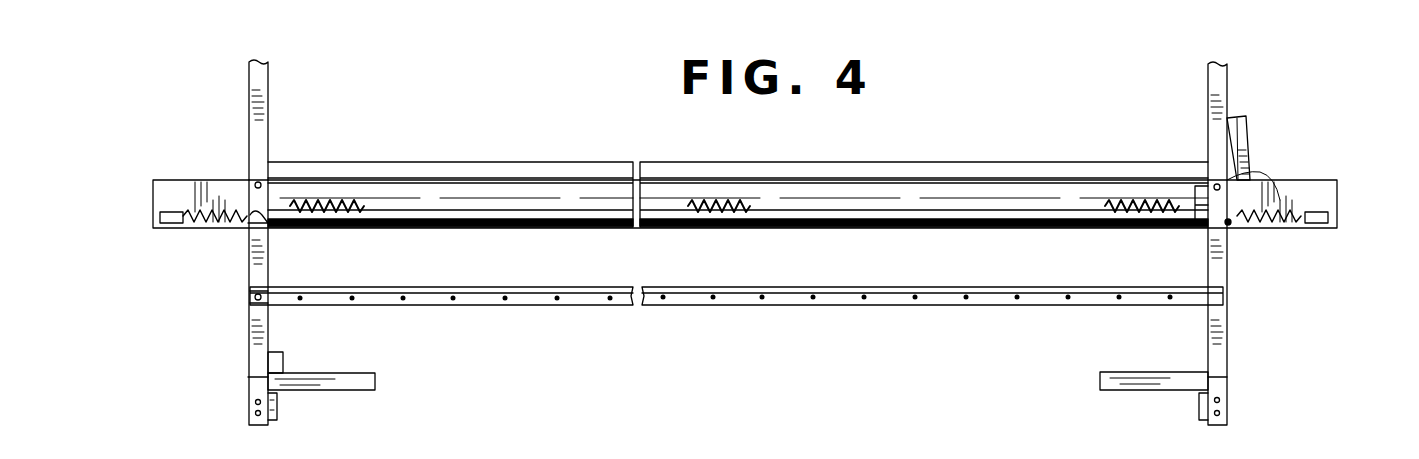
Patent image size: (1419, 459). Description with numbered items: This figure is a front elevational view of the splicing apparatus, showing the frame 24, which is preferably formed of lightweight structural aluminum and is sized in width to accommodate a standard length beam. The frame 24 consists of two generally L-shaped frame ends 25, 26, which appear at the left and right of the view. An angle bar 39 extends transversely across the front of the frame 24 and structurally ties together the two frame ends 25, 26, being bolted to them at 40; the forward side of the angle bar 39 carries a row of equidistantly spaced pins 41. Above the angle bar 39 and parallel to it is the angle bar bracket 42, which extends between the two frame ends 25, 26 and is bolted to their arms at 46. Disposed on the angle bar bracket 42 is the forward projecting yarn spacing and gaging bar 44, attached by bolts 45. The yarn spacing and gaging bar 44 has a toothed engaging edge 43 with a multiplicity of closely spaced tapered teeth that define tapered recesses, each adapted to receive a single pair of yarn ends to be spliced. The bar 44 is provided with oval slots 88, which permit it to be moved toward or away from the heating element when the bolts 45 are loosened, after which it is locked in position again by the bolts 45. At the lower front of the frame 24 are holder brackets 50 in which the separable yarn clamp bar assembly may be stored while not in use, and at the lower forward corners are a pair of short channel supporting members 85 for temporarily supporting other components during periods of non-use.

The frame 24 is at (248, 338).
The frame end 25 is at (272, 95).
The frame end 26 is at (1227, 348).
The angle bar 39 is at (585, 302).
The bolts 40 is at (248, 295).
The pins 41 is at (503, 301).
The angle bar bracket 42 is at (1337, 193).
The toothed engaging edge 43 is at (885, 200).
The yarn spacing and gaging bar 44 is at (707, 193).
The bolts 45 is at (1250, 178).
The bolts 46 is at (262, 185).
The holder brackets 50 is at (258, 385).
The channel supporting members 85 is at (340, 390).
The oval slots 88 is at (1202, 203).